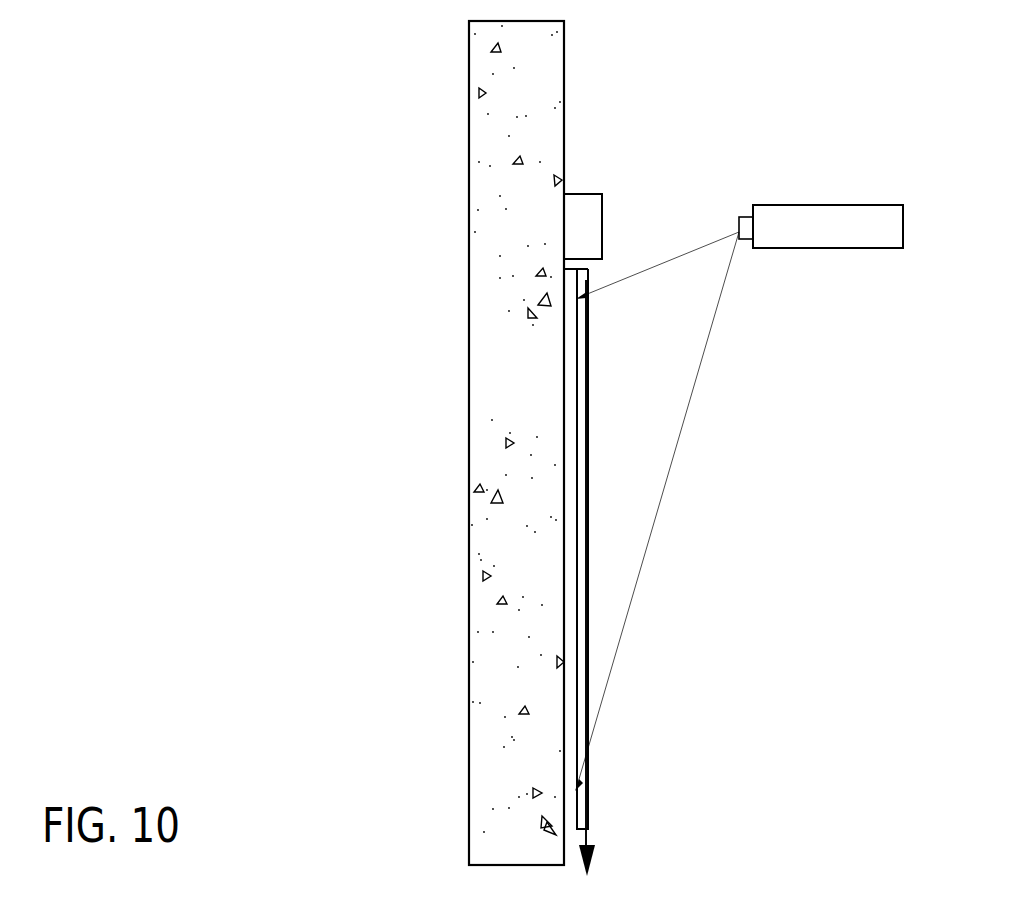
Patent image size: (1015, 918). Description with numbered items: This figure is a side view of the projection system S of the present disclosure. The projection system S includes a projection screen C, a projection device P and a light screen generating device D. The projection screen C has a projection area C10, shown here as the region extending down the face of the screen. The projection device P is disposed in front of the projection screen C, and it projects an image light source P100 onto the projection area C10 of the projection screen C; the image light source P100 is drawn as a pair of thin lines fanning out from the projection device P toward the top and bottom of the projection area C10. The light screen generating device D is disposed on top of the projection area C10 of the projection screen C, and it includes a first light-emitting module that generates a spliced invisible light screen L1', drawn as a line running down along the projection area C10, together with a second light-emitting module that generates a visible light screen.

The projection system S is at (251, 47).
The light screen generating device D is at (589, 178).
The projection screen C is at (593, 258).
The projection area C10 is at (578, 686).
The spliced invisible light screen L1' is at (660, 578).
The projection device P is at (914, 224).
The image light source P100 is at (714, 365).